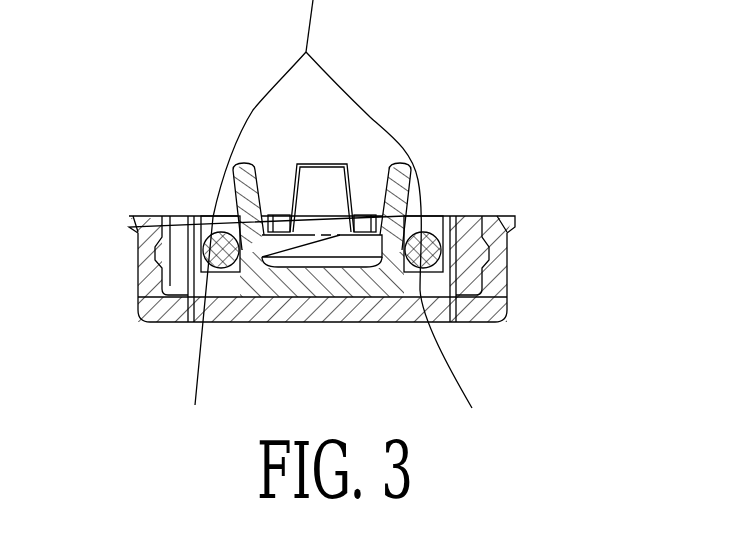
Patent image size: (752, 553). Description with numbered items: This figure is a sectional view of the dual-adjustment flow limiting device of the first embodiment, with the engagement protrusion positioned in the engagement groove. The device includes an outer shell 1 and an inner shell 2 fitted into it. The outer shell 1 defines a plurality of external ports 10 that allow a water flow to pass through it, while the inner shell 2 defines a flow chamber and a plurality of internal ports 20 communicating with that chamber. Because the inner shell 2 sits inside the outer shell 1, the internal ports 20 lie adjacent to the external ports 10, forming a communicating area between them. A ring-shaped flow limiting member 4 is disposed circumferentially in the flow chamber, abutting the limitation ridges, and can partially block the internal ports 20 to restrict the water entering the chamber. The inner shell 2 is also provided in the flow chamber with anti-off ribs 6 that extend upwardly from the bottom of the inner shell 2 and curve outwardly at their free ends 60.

The outer shell 1 is at (490, 308).
The inner shell 2 is at (470, 272).
The flow limiting member 4 is at (445, 240).
The anti-off ribs 6 is at (325, 197).
The free ends 60 is at (395, 168).
The external ports 10 is at (195, 318).
The internal ports 20 is at (203, 285).